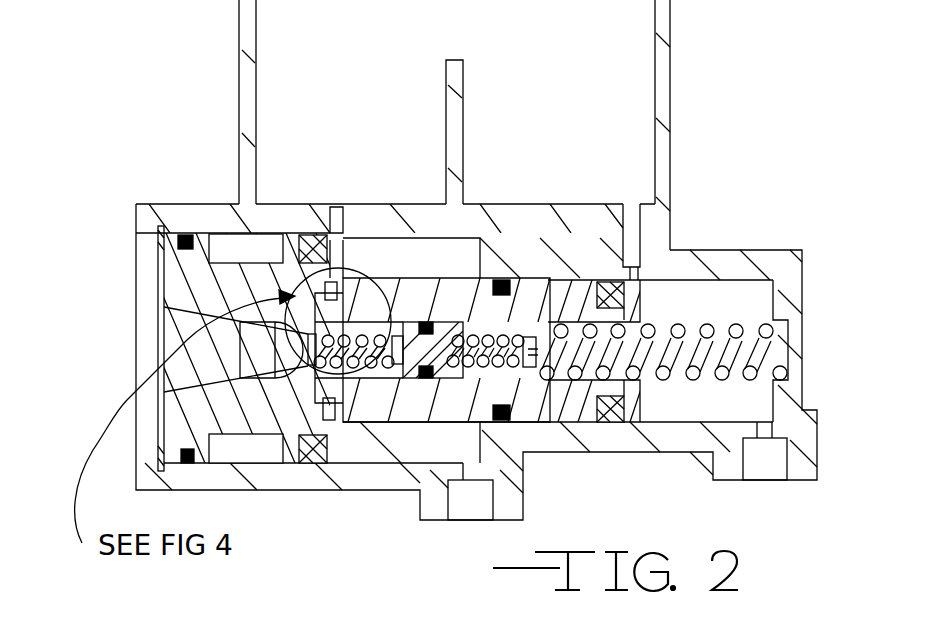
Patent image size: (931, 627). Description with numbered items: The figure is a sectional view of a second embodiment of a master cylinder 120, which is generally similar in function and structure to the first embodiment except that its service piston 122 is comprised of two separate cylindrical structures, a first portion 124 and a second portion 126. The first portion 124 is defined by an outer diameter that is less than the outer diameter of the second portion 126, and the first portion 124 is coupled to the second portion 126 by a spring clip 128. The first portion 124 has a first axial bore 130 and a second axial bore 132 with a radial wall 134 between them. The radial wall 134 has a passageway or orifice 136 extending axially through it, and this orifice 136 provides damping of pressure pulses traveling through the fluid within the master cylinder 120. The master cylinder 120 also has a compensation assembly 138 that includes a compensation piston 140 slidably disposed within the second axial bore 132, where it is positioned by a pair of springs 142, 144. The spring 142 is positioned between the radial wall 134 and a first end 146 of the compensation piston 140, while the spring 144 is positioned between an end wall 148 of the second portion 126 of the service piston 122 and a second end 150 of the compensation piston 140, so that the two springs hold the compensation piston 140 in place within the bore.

The master cylinder 120 is at (700, 103).
The service piston 122 is at (156, 263).
The first portion 124 is at (540, 262).
The second portion 126 is at (224, 272).
The spring clip 128 is at (336, 422).
The first axial bore 130 is at (655, 356).
The second axial bore 132 is at (303, 386).
The radial wall 134 is at (560, 305).
The orifice 136 is at (547, 340).
The compensation assembly 138 is at (418, 298).
The compensation piston 140 is at (448, 385).
The spring 142 is at (500, 386).
The spring 144 is at (363, 333).
The first end 146 is at (476, 300).
The end wall 148 is at (277, 330).
The second end 150 is at (380, 386).